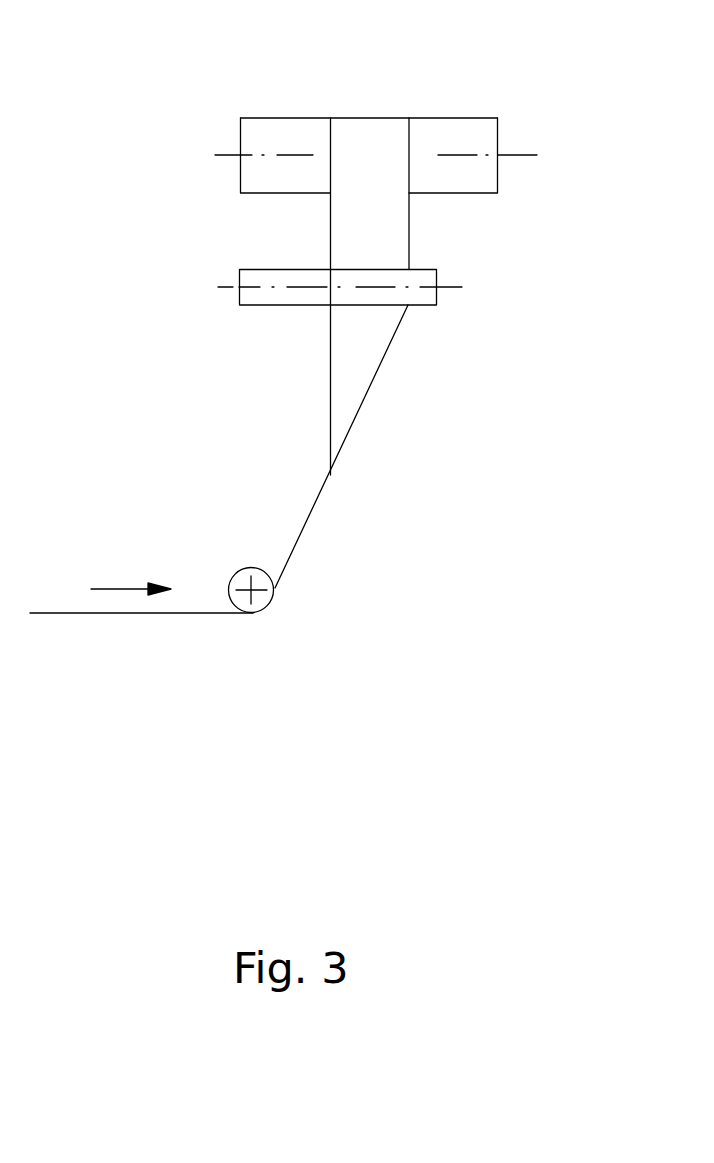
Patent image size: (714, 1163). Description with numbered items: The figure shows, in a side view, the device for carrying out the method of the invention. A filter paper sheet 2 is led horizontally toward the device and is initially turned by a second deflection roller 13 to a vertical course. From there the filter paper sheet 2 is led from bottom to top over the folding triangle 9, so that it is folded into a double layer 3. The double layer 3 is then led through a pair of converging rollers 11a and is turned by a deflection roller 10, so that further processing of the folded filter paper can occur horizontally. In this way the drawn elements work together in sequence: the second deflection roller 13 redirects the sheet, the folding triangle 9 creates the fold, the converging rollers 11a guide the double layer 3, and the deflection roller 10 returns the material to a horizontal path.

The filter paper sheet 2 is at (95, 613).
The double layer 3 is at (380, 133).
The folding triangle 9 is at (373, 382).
The deflection roller 10 is at (482, 174).
The pair of converging rollers 11a is at (427, 275).
The second deflection roller 13 is at (262, 597).